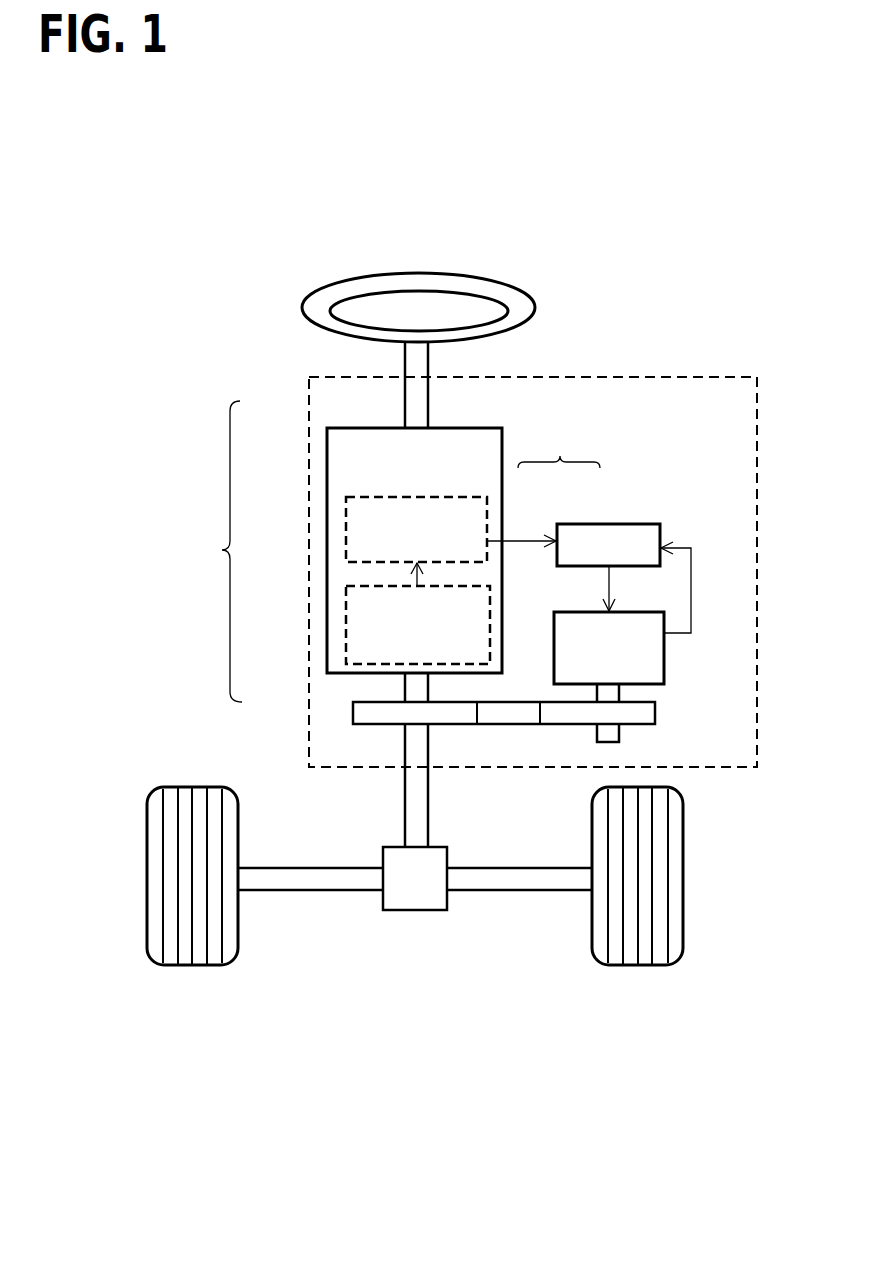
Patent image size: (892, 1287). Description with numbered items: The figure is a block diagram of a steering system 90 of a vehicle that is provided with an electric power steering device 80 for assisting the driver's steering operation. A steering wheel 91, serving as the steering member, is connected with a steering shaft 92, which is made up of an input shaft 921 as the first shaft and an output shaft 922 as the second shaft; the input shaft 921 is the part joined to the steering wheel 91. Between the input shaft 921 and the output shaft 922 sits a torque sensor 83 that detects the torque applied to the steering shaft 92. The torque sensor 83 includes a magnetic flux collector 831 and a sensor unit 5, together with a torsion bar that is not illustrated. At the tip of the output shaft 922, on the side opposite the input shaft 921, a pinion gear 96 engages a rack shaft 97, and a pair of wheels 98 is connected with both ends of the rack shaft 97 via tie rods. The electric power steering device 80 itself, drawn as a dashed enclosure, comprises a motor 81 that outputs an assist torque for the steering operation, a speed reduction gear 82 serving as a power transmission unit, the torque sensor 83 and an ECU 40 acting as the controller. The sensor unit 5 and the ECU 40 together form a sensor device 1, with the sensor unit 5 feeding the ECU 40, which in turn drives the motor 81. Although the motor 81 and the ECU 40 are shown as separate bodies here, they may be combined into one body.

The sensor device 1 is at (559, 445).
The sensor unit 5 is at (487, 518).
The ECU 40 is at (575, 524).
The electric power steering device 80 is at (757, 410).
The motor 81 is at (665, 657).
The speed reduction gear 82 is at (657, 712).
The torque sensor 83 is at (458, 428).
The magnetic flux collector 831 is at (490, 588).
The steering system 90 is at (313, 1073).
The steering wheel 91 is at (302, 308).
The steering shaft 92 is at (215, 551).
The input shaft 921 is at (415, 414).
The output shaft 922 is at (415, 690).
The pinion gear 96 is at (406, 910).
The rack shaft 97 is at (303, 890).
The wheels 98 is at (210, 965).